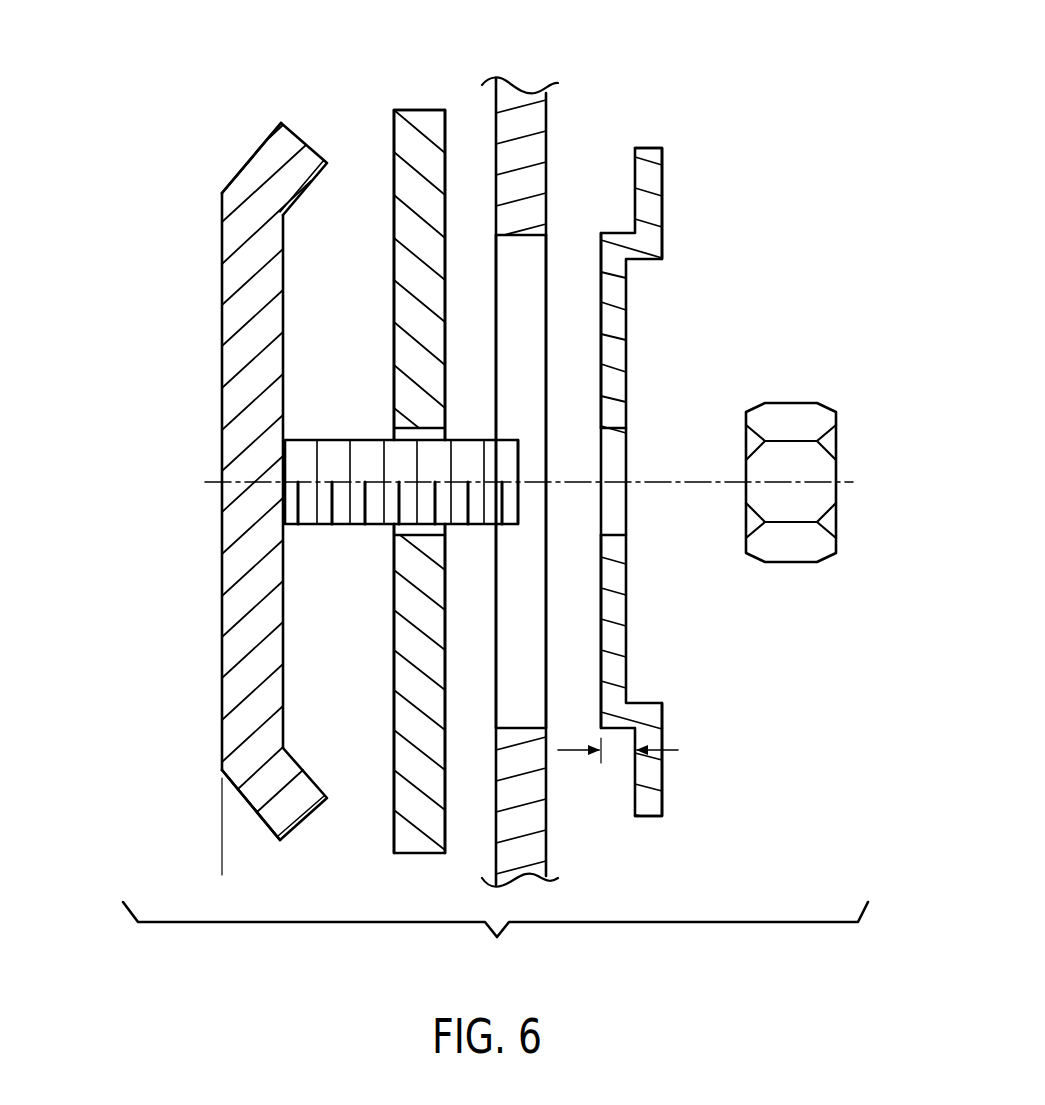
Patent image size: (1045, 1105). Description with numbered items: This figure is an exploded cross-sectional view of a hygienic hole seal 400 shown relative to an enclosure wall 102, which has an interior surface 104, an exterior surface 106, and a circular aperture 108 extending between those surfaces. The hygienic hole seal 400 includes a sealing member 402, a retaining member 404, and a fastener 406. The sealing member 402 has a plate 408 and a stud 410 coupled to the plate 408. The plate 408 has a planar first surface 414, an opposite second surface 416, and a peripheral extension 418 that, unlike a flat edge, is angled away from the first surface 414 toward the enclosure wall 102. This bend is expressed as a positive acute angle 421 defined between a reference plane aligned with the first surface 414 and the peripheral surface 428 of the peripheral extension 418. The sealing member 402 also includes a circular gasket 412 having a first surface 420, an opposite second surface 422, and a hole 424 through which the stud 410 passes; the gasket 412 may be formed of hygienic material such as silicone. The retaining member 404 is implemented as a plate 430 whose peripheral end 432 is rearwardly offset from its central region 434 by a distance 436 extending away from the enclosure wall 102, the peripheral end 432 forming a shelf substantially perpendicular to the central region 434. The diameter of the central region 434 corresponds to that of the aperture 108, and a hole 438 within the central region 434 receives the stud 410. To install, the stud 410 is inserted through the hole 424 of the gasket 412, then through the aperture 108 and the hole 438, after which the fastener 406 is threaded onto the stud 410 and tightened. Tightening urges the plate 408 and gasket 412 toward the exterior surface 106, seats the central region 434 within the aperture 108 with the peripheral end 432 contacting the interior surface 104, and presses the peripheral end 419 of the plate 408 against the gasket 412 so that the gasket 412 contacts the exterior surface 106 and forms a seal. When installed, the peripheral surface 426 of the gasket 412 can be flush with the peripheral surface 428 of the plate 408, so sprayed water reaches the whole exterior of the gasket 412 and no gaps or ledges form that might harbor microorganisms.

The enclosure wall 102 is at (536, 498).
The interior surface 104 is at (548, 848).
The exterior surface 106 is at (496, 828).
The aperture 108 is at (527, 333).
The hygienic hole seal 400 is at (484, 495).
The sealing member 402 is at (235, 507).
The retaining member 404 is at (669, 483).
The fastener 406 is at (817, 412).
The plate 408 is at (238, 560).
The stud 410 is at (508, 513).
The gasket 412 is at (391, 435).
The first surface 414 is at (222, 412).
The second surface 416 is at (283, 599).
The peripheral extension 418 is at (245, 131).
The peripheral end 419 is at (331, 172).
The first surface 420 is at (394, 295).
The acute angle 421 is at (249, 833).
The second surface 422 is at (447, 135).
The hole 424 is at (411, 530).
The peripheral surface 426 is at (416, 110).
The peripheral surface 428 is at (254, 156).
The plate 430 is at (623, 292).
The peripheral end 432 is at (680, 182).
The central region 434 is at (644, 622).
The distance 436 is at (573, 753).
The hole 438 is at (630, 431).